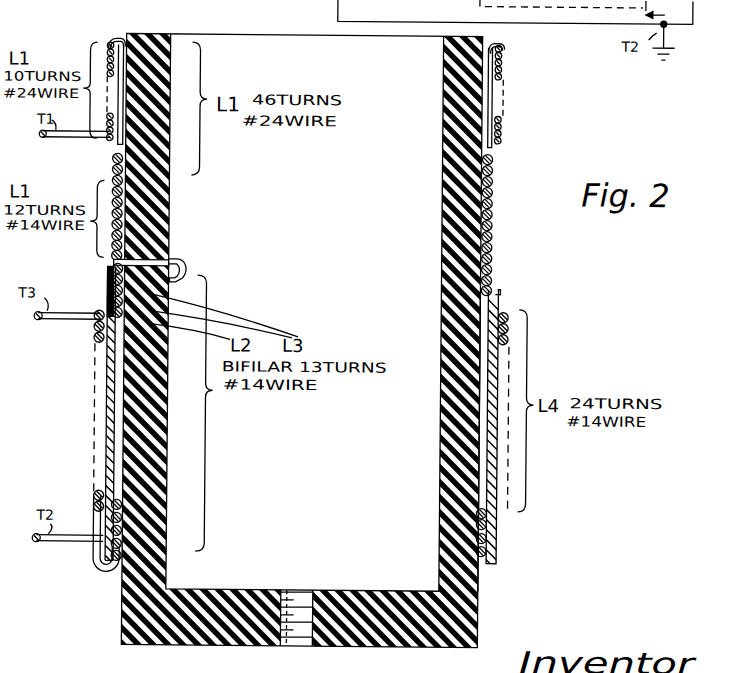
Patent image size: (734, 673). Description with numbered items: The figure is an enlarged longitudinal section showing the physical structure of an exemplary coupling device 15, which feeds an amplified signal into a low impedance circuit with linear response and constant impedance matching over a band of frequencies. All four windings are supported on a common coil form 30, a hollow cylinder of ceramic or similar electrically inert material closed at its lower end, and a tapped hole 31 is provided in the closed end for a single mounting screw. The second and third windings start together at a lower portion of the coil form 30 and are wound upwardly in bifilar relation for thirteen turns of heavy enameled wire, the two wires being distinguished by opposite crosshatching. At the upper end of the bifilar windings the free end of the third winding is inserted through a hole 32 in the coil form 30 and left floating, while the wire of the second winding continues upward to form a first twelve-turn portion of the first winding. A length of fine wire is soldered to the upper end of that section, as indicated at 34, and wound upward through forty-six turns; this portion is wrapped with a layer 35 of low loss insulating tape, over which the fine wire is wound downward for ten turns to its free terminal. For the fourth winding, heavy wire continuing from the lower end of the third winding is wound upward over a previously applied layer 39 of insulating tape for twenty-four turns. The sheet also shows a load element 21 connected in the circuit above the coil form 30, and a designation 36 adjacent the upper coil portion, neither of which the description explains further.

The coupling device 15 is at (305, 312).
The load impedance 21 is at (515, 12).
The coil form 30 is at (465, 609).
The tapped hole 31 is at (289, 640).
The hole 32 is at (170, 260).
The connection of #24 wire to first section of winding L1 34 is at (116, 170).
The layer of low loss insulating tape 35 is at (115, 40).
The coil L1 section (10 turns) 36 is at (110, 46).
The layer of insulating tape 39 is at (107, 295).